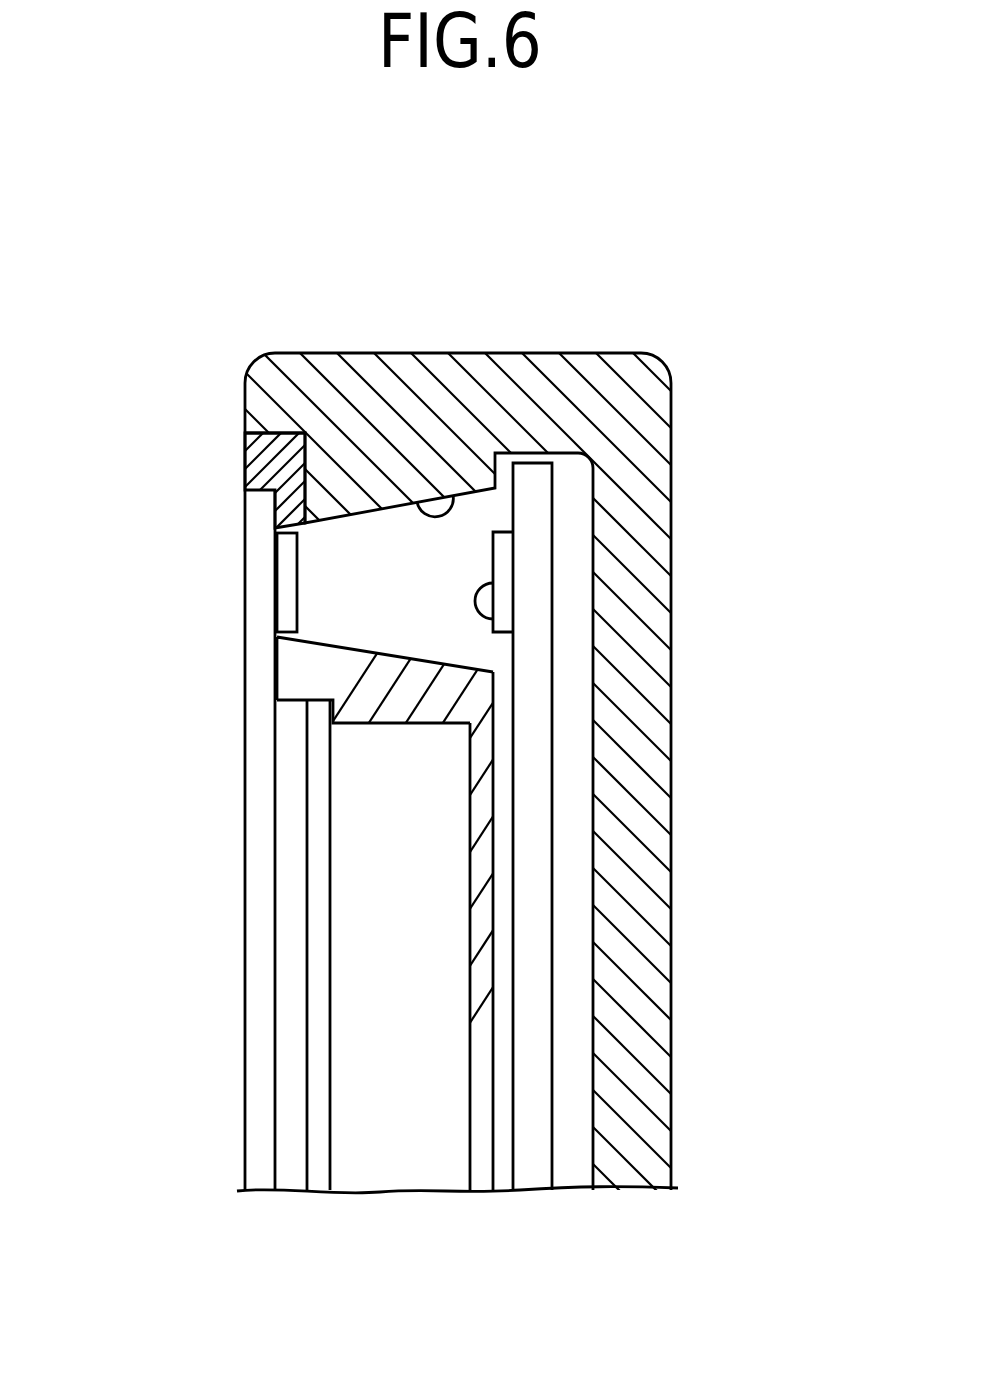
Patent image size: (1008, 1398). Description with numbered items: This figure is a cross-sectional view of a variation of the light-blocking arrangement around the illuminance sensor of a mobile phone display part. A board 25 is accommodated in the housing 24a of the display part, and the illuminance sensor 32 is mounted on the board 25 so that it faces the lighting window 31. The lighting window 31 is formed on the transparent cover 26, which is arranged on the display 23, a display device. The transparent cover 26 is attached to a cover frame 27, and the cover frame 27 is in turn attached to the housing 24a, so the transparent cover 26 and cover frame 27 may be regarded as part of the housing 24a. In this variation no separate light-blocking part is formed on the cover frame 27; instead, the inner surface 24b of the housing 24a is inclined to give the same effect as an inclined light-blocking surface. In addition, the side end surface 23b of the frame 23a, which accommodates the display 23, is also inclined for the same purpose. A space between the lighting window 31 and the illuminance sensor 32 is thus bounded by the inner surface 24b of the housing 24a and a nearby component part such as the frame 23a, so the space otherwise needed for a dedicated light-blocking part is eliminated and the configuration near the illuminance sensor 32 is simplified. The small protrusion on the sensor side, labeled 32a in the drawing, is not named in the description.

The display 23 is at (393, 1162).
The frame 23a is at (480, 1185).
The side end surface 23b is at (392, 655).
The housing 24a is at (647, 800).
The inner surface 24b is at (452, 495).
The board 25 is at (533, 920).
The transparent cover 26 is at (260, 922).
The cover frame 27 is at (257, 448).
The lighting window 31 is at (283, 575).
The illuminance sensor 32 is at (507, 550).
The stopper protrusion 32a is at (493, 618).